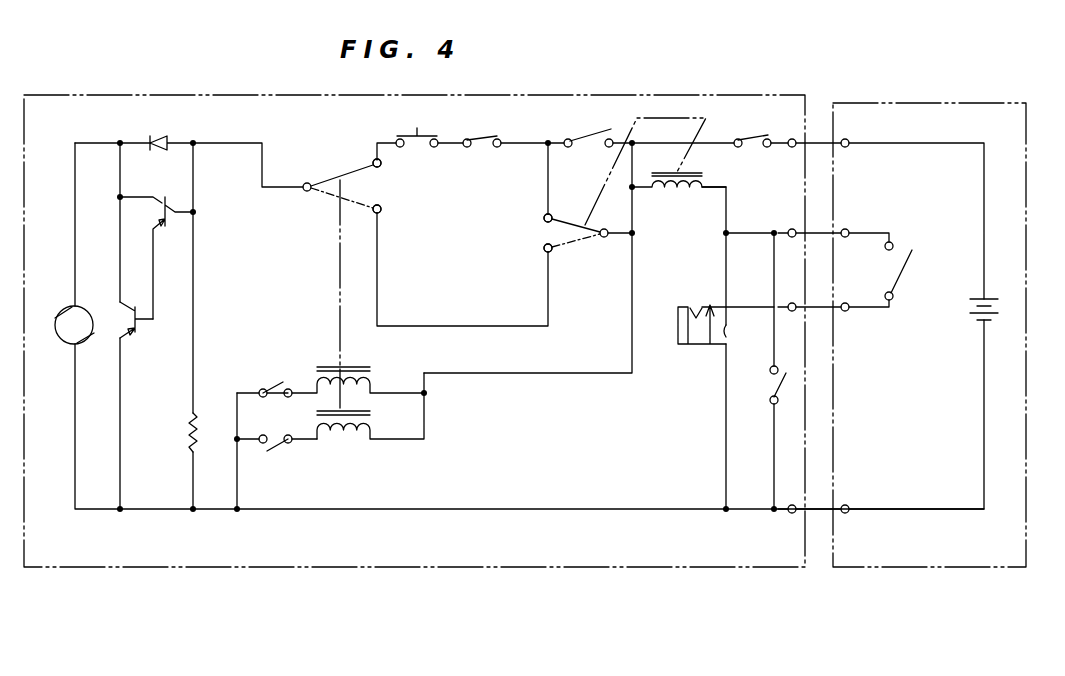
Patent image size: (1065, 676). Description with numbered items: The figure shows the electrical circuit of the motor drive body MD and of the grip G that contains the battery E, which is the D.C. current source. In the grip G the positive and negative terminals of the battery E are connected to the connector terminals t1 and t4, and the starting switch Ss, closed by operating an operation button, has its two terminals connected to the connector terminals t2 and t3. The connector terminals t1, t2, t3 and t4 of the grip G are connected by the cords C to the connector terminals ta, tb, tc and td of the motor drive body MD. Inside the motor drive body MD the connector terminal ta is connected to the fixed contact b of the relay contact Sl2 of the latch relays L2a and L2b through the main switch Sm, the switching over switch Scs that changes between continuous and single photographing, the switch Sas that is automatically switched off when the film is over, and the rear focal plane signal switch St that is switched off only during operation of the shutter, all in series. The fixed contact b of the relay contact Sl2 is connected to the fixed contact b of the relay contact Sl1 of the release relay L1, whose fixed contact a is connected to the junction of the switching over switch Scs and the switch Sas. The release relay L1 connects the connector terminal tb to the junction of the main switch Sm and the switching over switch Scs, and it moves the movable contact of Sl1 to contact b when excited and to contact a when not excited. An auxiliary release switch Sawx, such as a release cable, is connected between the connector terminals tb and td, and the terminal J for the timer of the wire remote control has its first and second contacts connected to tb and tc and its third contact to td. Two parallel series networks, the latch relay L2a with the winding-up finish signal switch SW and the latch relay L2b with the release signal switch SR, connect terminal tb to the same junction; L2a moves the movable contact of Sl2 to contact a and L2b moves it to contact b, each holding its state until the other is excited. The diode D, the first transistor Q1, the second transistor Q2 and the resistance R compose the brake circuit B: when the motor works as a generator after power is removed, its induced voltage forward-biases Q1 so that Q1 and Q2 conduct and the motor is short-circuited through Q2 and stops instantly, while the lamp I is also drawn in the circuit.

The motor drive body MD is at (503, 567).
The grip G is at (905, 567).
The diode D is at (156, 132).
The first transistor Q1 is at (156, 244).
The second transistor Q2 is at (140, 332).
The lamp I is at (66, 337).
The brake circuit B is at (193, 340).
The resistance R is at (202, 432).
The signal switch for the finish of winding up SW is at (265, 376).
The signal switch for the release operation SR is at (277, 451).
The latch relay L2a is at (358, 368).
The latch relay L2b is at (370, 432).
The relay contact Sl2 is at (342, 183).
The fixed contact a is at (462, 207).
The fixed contact b is at (462, 204).
The rear focal plane signal switch St is at (417, 128).
The switch Sas is at (485, 128).
The switching over switch Scs is at (583, 128).
The relay contact Sl1 is at (576, 243).
The release relay L1 is at (679, 198).
The main switch Sm is at (754, 128).
The connector terminal ta is at (786, 158).
The connector terminal tb is at (786, 220).
The connector terminal tc is at (786, 294).
The connector terminal td is at (786, 497).
The connector terminal t1 is at (853, 157).
The connector terminal t2 is at (850, 220).
The connector terminal t3 is at (850, 294).
The connector terminal t4 is at (850, 497).
The cords C is at (818, 311).
The starting switch Ss is at (909, 271).
The battery E is at (988, 297).
The auxiliary release switch Sawx is at (772, 388).
The terminal for the timer of the wire remote control J is at (726, 341).